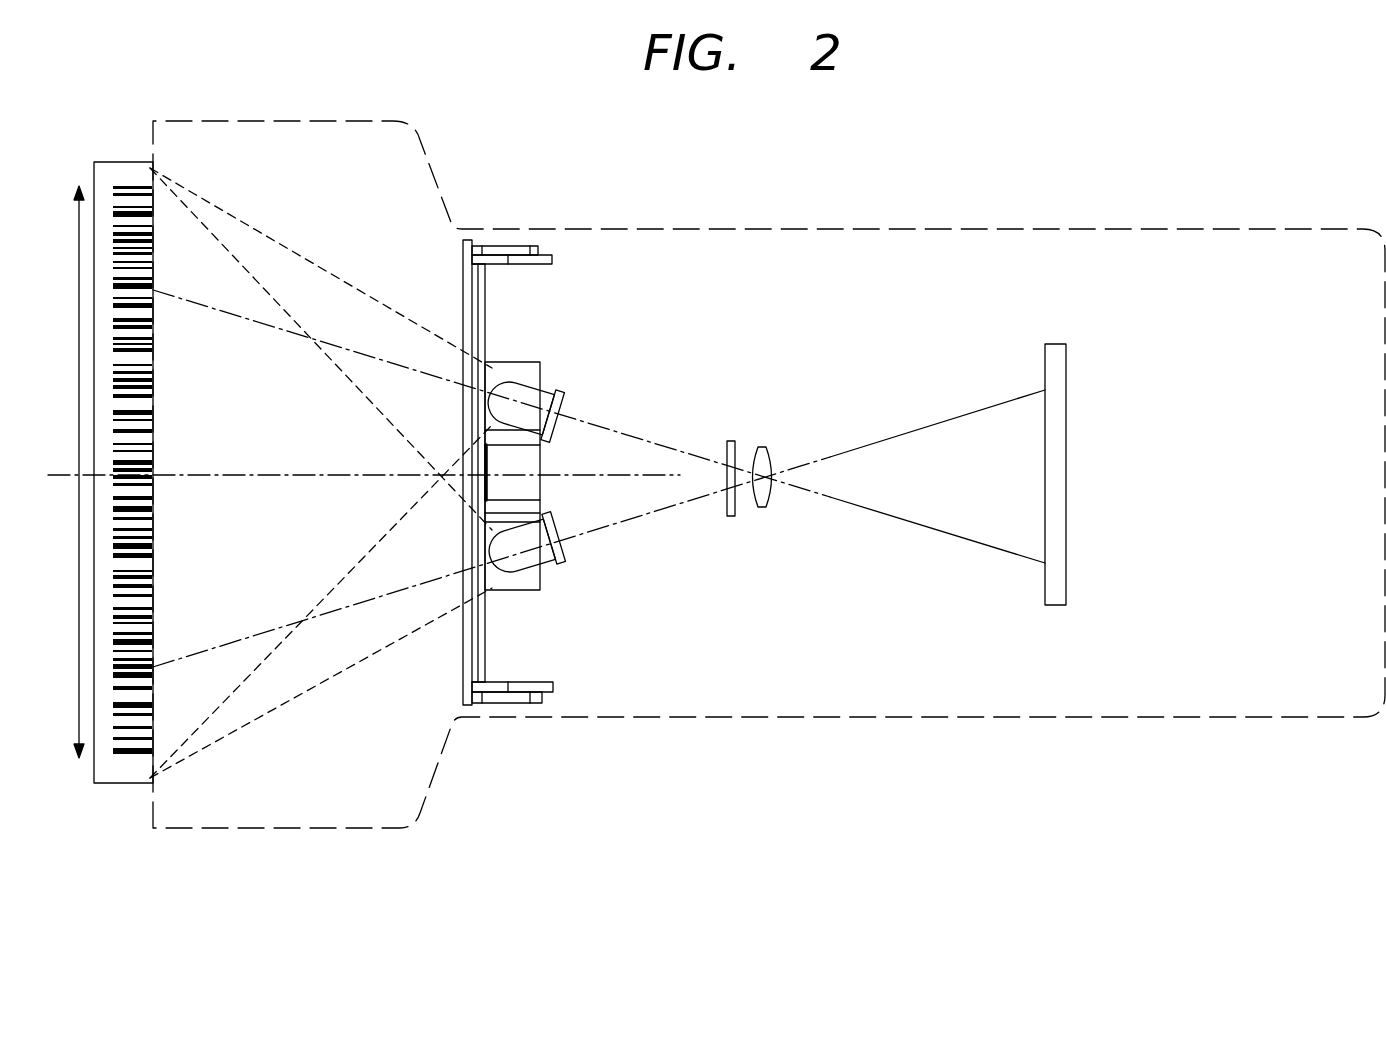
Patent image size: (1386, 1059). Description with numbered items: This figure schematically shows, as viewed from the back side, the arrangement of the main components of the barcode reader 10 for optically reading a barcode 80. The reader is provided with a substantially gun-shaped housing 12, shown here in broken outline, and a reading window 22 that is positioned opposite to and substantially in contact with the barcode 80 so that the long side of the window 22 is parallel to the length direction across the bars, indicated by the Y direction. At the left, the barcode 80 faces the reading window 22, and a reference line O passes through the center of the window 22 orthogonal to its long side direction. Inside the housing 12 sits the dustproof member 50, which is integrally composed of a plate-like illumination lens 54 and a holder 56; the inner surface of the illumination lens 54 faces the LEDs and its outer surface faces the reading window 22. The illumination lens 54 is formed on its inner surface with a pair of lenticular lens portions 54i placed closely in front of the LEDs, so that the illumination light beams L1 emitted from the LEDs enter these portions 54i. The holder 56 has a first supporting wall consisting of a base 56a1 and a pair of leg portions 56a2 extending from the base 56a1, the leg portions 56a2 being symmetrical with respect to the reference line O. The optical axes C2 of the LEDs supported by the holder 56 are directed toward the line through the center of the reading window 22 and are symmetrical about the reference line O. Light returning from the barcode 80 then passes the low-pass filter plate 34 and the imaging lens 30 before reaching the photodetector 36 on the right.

The barcode reader 10 is at (1281, 204).
The housing 12 is at (1115, 229).
The reading window 22 is at (150, 800).
The barcode 80 is at (108, 783).
The imaging lens 30 is at (768, 448).
The low-pass filter plate 34 is at (731, 441).
The photodetector 36 is at (1057, 344).
The dustproof member 50 is at (458, 238).
The illumination lens 54 is at (463, 358).
The lenticular lens portions 54i is at (492, 376).
The holder 56 is at (527, 362).
The base 56a1 is at (599, 528).
The leg portions 56a2 is at (553, 384).
The optical axes of the LEDs C2 is at (235, 318).
The illumination light beams L1 is at (263, 236).
The reference line O is at (63, 487).
The Y direction Y is at (79, 488).